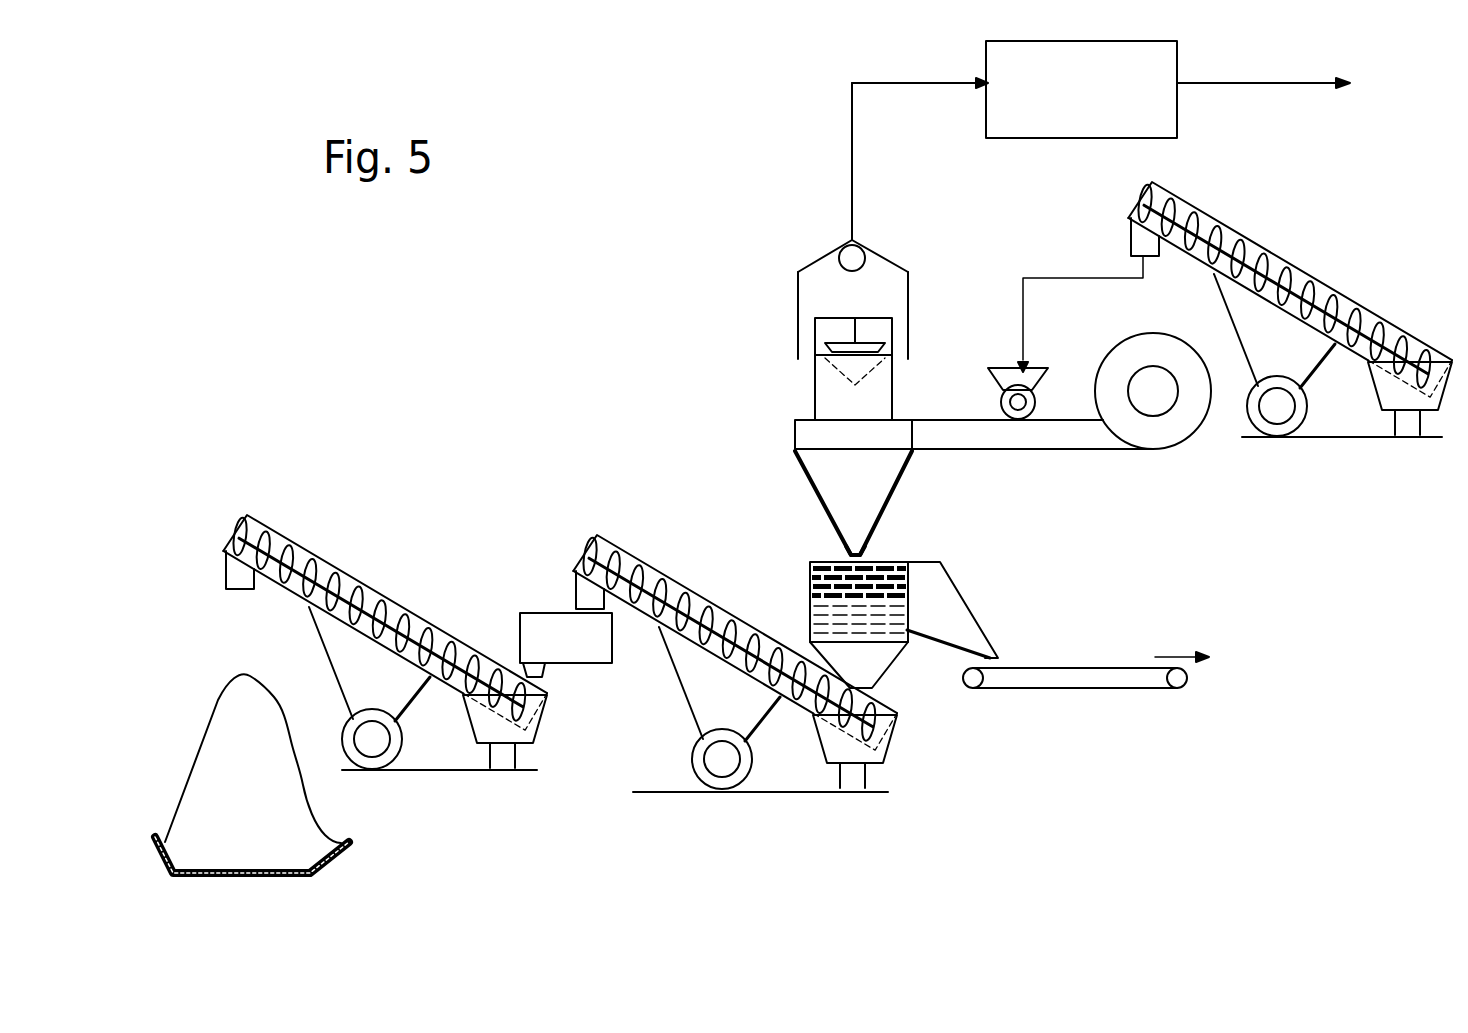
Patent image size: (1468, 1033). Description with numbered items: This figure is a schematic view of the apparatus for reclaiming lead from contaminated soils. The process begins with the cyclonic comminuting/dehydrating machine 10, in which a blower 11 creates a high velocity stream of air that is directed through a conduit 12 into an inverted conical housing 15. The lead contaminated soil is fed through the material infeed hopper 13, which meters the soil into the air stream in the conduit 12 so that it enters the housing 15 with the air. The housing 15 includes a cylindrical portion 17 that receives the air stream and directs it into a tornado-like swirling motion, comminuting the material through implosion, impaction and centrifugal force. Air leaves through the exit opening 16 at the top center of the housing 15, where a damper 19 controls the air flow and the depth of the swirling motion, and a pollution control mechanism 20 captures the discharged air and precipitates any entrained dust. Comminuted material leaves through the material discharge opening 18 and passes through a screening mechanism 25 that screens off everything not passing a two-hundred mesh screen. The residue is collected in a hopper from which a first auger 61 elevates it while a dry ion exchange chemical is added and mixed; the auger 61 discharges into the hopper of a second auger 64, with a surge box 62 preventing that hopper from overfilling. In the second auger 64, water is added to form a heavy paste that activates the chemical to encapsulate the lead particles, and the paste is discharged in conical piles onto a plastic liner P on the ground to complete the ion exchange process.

The cyclonic comminuting/dehydrating machine 10 is at (707, 279).
The blower 11 is at (1209, 420).
The conduit 12 is at (1085, 452).
The material infeed hopper 13 is at (1048, 380).
The inverted conical housing 15 is at (907, 478).
The exit opening 16 is at (858, 412).
The cylindrical portion 17 is at (794, 447).
The material discharge opening 18 is at (867, 553).
The damper 19 is at (832, 336).
The pollution control mechanism 20 is at (1177, 108).
The screening mechanism 25 is at (810, 583).
The first auger 61 is at (615, 538).
The surge box 62 is at (535, 613).
The second auger 64 is at (293, 542).
The plastic liner P is at (340, 863).